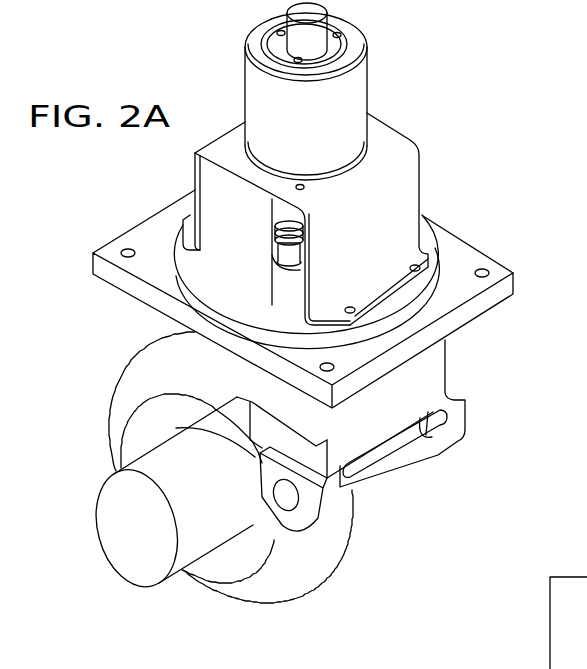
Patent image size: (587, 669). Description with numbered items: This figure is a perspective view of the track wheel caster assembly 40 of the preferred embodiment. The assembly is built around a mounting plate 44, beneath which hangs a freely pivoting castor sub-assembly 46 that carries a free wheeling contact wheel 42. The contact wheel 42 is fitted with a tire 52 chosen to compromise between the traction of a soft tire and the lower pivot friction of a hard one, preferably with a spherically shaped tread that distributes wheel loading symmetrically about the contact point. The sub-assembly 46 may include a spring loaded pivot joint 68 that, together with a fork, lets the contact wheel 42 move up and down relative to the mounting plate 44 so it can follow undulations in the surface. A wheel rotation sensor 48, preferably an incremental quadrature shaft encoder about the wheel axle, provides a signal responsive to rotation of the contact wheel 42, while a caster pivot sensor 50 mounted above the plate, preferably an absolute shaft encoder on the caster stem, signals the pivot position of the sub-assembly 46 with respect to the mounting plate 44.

The track wheel caster assembly 40 is at (66, 324).
The free wheeling contact wheel 42 is at (223, 572).
The mounting plate 44 is at (462, 257).
The freely pivoting castor sub-assembly 46 is at (379, 435).
The wheel rotation sensor 48 is at (108, 520).
The caster pivot sensor 50 is at (333, 118).
The tire 52 is at (312, 553).
The spring loaded pivot joint 68 is at (440, 423).